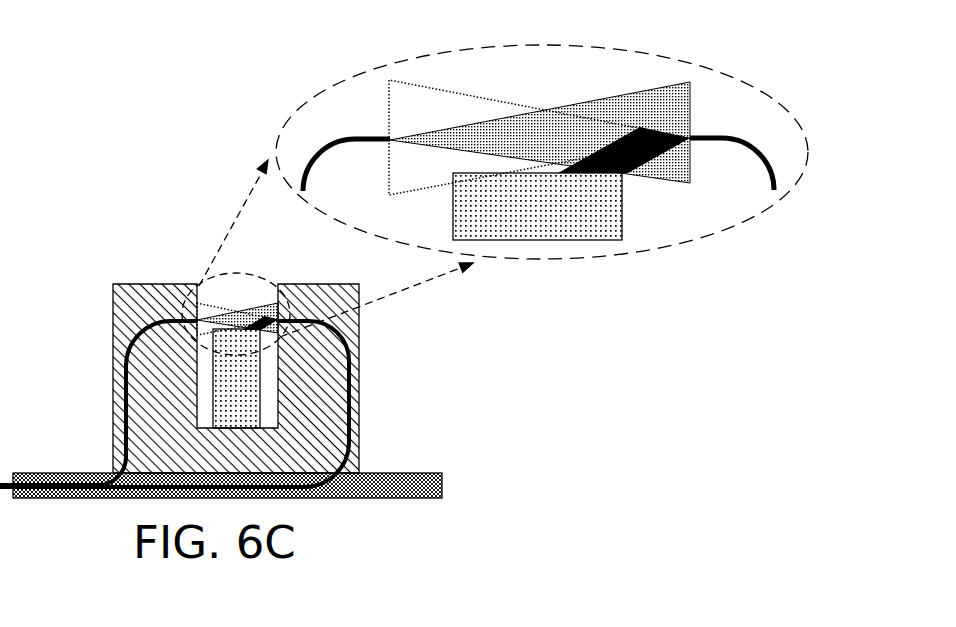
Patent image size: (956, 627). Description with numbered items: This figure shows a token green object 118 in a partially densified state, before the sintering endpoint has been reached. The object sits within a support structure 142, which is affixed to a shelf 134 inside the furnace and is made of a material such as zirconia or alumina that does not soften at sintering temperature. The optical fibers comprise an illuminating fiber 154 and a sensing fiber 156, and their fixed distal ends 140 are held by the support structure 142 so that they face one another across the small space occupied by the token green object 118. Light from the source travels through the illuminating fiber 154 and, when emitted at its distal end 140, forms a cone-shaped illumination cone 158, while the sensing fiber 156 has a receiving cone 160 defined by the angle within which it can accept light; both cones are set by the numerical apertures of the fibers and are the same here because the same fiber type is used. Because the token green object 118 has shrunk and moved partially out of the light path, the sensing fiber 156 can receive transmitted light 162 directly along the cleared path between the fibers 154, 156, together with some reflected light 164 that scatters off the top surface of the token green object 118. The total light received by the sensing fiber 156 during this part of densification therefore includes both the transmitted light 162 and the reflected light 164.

The distal end 140 is at (362, 112).
The receiving cone 160 is at (424, 85).
The transmitted light 162 is at (455, 133).
The illumination cone 158 is at (665, 83).
The reflected light 164 is at (628, 176).
The token green object 118 is at (556, 218).
The support structure 142 is at (113, 299).
The illuminating fiber 154 is at (125, 430).
The sensing fiber 156 is at (349, 449).
The shelf 134 is at (403, 473).